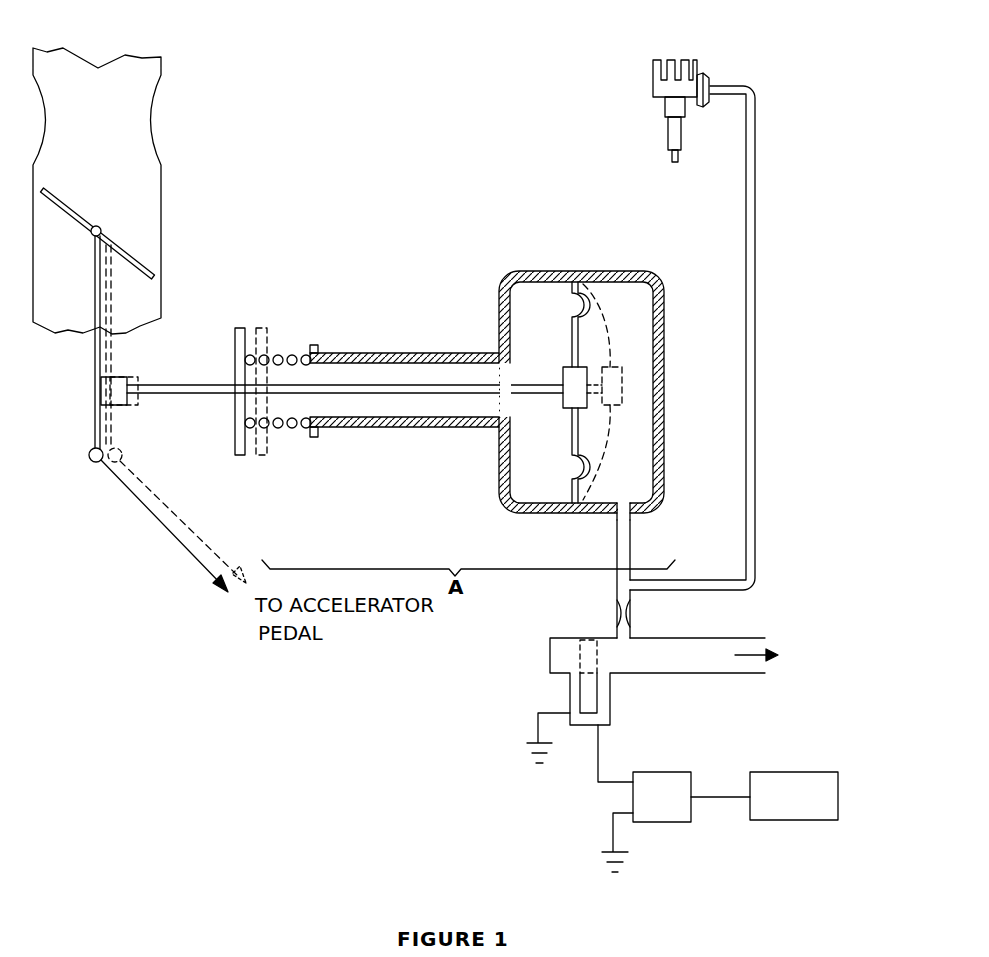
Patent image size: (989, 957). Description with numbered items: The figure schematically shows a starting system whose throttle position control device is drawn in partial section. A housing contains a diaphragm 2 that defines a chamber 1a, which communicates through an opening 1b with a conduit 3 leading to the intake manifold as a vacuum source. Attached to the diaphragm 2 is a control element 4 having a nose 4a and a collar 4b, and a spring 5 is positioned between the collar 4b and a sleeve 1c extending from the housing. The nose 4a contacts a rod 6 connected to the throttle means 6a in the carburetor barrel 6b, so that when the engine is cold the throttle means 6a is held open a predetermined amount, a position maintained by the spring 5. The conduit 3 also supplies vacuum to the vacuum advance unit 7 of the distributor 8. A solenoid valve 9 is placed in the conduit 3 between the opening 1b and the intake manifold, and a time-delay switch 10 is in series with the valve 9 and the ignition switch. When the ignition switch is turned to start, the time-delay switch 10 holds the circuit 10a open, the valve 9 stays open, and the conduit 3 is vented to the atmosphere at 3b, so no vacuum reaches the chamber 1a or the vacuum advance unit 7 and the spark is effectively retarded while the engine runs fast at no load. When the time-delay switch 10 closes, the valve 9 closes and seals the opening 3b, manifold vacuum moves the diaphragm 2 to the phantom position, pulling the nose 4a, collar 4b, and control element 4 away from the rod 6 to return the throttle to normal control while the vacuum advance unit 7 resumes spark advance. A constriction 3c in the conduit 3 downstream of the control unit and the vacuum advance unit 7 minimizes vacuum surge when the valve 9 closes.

The chamber 1a is at (612, 330).
The opening 1b is at (625, 505).
The sleeve 1c is at (400, 430).
The diaphragm 2 is at (568, 320).
The conduit 3 is at (615, 549).
The atmospheric opening 3b is at (548, 655).
The constriction 3c is at (632, 610).
The control element 4 is at (398, 383).
The nose 4a is at (120, 375).
The collar 4b is at (243, 328).
The spring 5 is at (278, 353).
The rod 6 is at (94, 370).
The throttle means 6a is at (127, 250).
The carburetor barrel 6b is at (163, 190).
The vacuum advance unit 7 is at (710, 78).
The distributor 8 is at (660, 62).
The valve 9 is at (612, 690).
The time-delay switch 10 is at (660, 771).
The circuit 10a is at (597, 757).